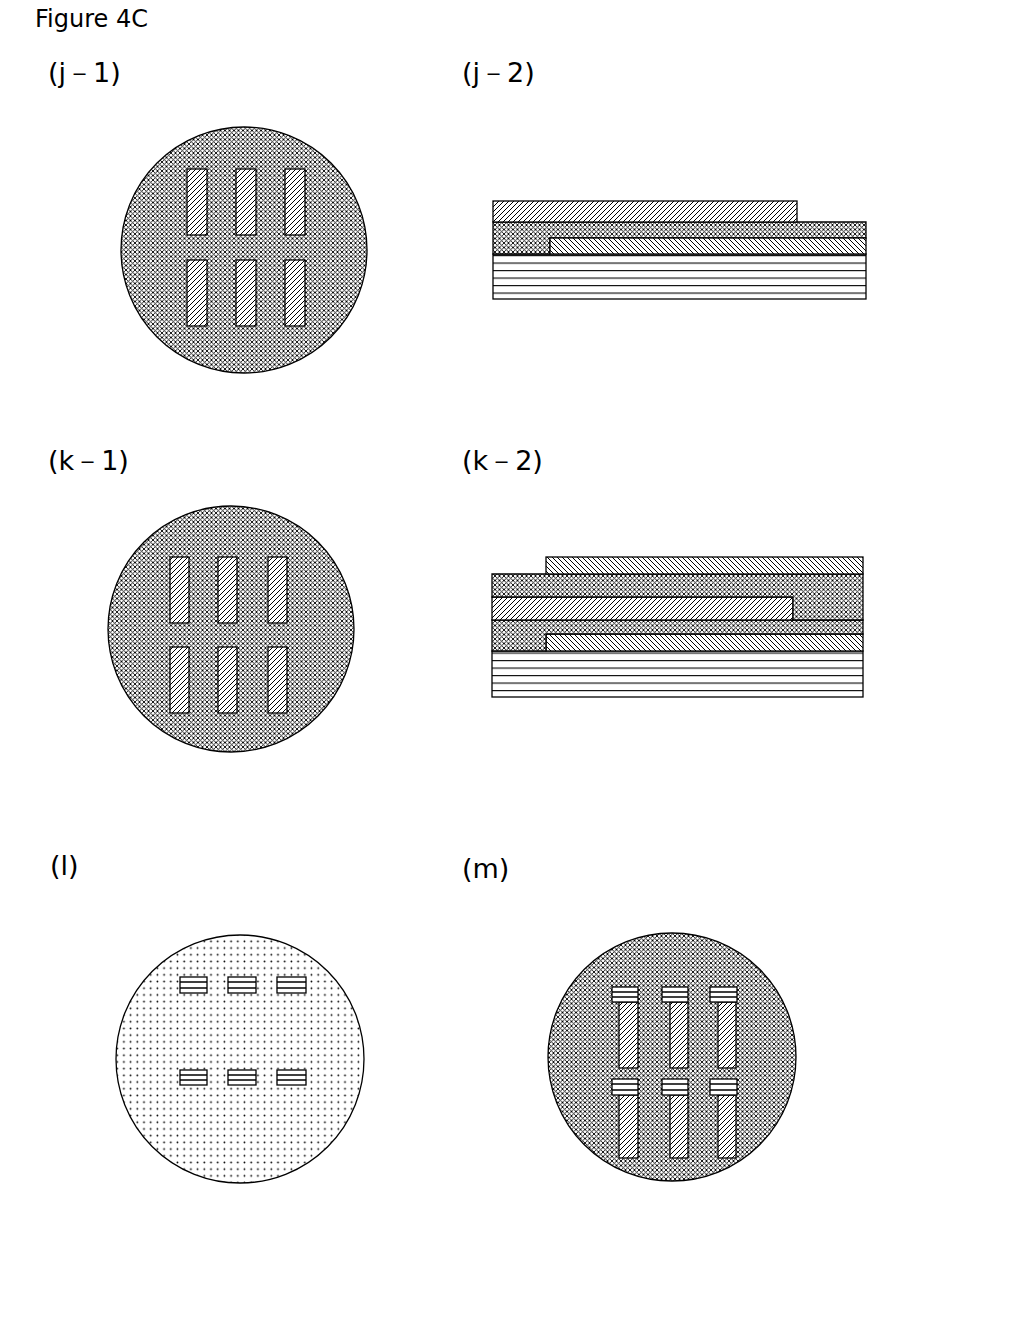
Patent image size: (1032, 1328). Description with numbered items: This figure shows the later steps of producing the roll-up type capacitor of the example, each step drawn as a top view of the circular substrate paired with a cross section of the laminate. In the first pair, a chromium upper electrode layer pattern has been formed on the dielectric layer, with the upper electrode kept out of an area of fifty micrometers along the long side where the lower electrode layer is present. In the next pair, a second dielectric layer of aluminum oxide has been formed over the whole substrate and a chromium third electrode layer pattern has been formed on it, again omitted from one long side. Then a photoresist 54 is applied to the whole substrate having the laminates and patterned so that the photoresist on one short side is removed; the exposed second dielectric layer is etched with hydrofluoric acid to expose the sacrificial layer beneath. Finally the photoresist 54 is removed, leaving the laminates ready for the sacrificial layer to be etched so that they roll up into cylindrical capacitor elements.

The photoresist 54 is at (333, 1012).